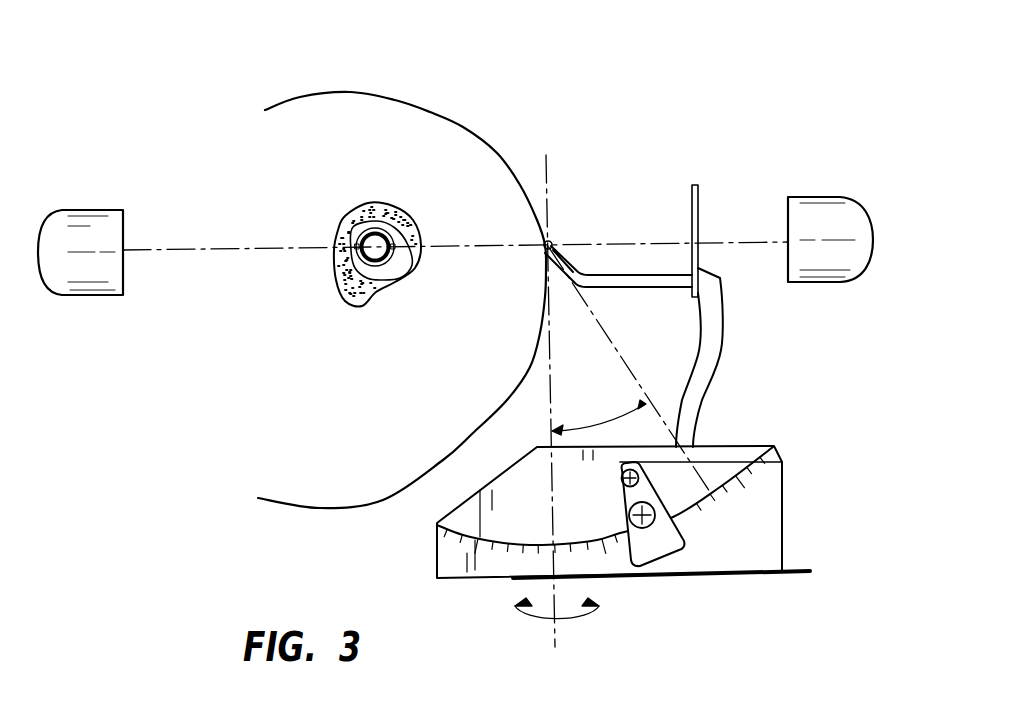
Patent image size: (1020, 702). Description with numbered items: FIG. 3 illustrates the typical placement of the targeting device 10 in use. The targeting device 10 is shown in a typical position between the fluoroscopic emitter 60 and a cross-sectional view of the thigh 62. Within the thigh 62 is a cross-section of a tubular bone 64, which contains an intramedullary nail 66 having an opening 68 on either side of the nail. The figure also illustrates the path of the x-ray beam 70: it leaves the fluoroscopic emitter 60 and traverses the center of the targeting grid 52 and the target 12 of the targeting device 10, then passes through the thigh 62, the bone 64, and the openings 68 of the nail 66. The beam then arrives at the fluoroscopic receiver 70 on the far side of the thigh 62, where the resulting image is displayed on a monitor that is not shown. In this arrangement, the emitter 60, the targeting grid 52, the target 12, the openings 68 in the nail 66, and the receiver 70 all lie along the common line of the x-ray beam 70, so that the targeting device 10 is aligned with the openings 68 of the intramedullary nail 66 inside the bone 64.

The targeting device 10 is at (776, 405).
The target 12 is at (552, 240).
The targeting grid 52 is at (700, 205).
The fluoroscopic emitter 60 is at (820, 197).
The thigh 62 is at (420, 101).
The tubular bone 64 is at (398, 210).
The intramedullary nail 66 is at (395, 228).
The opening 68 is at (410, 268).
The x-ray beam 70 is at (87, 210).